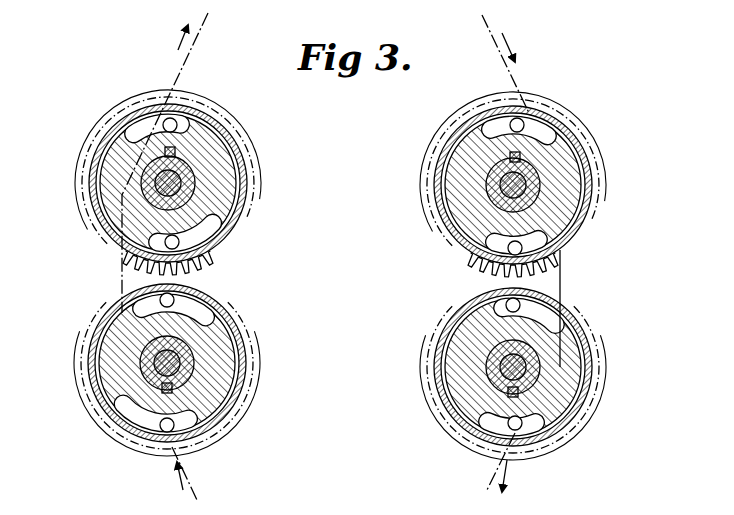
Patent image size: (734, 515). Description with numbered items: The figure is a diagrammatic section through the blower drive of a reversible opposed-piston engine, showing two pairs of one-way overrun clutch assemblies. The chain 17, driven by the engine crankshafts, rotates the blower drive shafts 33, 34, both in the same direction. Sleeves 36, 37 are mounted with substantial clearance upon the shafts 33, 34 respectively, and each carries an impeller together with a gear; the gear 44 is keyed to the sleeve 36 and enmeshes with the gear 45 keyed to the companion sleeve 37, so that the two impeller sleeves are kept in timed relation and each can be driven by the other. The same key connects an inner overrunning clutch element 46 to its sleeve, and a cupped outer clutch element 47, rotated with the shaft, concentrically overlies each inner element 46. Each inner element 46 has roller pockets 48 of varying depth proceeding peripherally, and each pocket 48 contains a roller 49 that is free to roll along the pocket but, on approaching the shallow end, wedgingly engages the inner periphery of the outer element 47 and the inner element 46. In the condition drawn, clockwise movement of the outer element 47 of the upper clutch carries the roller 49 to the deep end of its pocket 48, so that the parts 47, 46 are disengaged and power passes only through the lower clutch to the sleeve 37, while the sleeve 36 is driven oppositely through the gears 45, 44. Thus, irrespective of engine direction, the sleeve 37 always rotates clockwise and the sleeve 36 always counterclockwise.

The chain 17 is at (222, 482).
The blower drive shaft 33 is at (172, 178).
The blower drive shaft 34 is at (168, 363).
The sleeve 36 is at (158, 183).
The sleeve 37 is at (155, 370).
The gear 44 is at (258, 193).
The gear 45 is at (248, 395).
The inner overrunning clutch element 46 is at (205, 138).
The outer clutch element 47 is at (110, 230).
The roller pocket 48 is at (138, 127).
The roller 49 is at (172, 120).